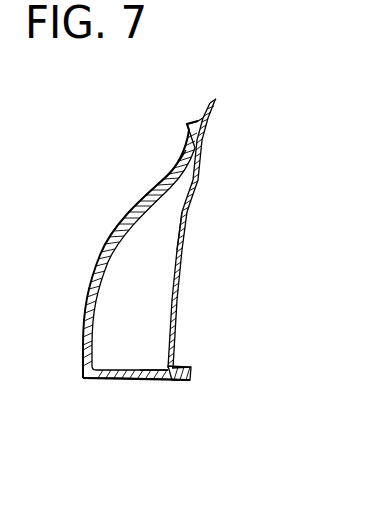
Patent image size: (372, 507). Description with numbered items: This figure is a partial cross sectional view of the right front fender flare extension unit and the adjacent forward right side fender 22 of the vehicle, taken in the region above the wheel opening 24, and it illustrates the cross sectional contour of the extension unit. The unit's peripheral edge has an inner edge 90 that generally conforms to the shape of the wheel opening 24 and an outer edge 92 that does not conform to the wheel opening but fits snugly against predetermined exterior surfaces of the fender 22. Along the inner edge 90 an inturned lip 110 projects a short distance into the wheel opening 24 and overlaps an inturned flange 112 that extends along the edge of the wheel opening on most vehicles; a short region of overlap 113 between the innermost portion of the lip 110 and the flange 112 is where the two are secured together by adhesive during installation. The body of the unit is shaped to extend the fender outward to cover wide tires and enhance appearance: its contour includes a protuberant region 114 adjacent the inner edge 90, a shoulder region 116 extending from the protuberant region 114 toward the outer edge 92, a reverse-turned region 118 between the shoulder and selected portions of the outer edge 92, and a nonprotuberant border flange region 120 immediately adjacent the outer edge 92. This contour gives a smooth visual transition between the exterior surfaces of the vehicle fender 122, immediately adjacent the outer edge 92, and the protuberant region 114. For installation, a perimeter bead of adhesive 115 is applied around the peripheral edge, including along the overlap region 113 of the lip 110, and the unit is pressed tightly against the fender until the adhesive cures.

The forward right side fender 22 is at (176, 249).
The wheel opening 24 is at (170, 370).
The inner edge 90 is at (105, 378).
The outer edge 92 is at (193, 122).
The inturned lip 110 is at (120, 378).
The inturned flange 112 is at (180, 363).
The region of overlap 113 is at (189, 384).
The protuberant region 114 is at (100, 224).
The perimeter bead of adhesive 115 is at (195, 150).
The shoulder region 116 is at (100, 222).
The reverse-turned region 118 is at (157, 183).
The nonprotuberant border flange region 120 is at (181, 152).
The exterior surfaces of the vehicle fender 122 is at (194, 122).